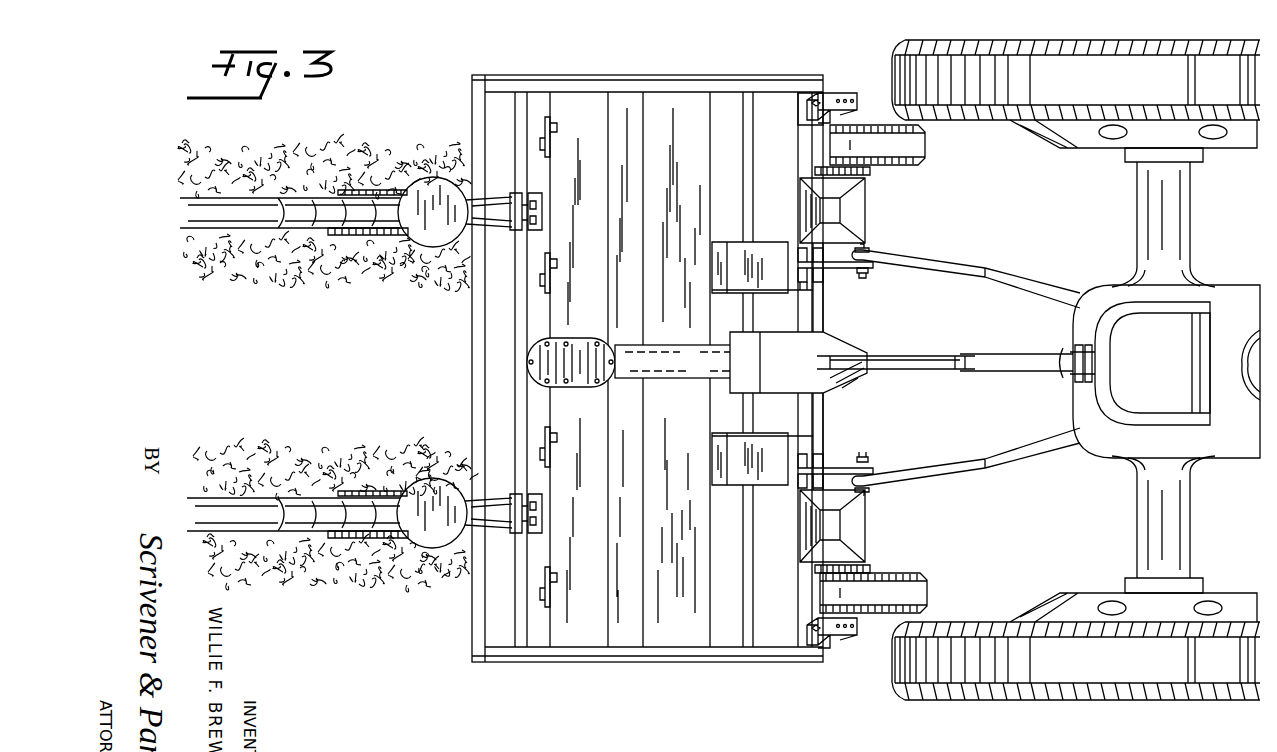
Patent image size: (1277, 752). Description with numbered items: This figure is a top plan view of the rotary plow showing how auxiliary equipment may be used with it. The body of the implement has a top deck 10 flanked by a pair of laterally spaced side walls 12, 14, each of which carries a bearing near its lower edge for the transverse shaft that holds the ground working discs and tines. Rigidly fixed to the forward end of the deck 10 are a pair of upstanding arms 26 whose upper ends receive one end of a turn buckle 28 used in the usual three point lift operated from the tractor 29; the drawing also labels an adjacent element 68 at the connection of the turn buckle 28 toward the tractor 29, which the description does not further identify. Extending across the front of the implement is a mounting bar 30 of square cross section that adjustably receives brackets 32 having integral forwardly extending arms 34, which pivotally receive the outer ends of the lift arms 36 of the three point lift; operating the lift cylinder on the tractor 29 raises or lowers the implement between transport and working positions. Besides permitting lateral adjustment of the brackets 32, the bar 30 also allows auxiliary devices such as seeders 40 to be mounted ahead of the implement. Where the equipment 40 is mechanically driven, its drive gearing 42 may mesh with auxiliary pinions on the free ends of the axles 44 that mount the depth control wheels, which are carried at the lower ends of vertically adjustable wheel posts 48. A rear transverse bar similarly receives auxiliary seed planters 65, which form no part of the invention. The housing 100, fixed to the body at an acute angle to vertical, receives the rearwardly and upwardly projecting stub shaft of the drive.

The top deck 10 is at (680, 648).
The side wall 12 is at (655, 75).
The side wall 14 is at (765, 660).
The upstanding arms 26 is at (845, 350).
The turn buckle 28 is at (957, 369).
The tractor 29 is at (1143, 508).
The mounting bar 30 is at (818, 318).
The brackets 32 is at (822, 278).
The forwardly extending arms 34 is at (868, 273).
The lift arms 36 is at (945, 272).
The seeders 40 is at (858, 200).
The drive gearing 42 is at (868, 170).
The axles 44 is at (815, 177).
The wheel posts 48 is at (840, 95).
The seed planters 65 is at (432, 248).
The draft tongue 68 is at (1000, 354).
The housing 100 is at (588, 338).